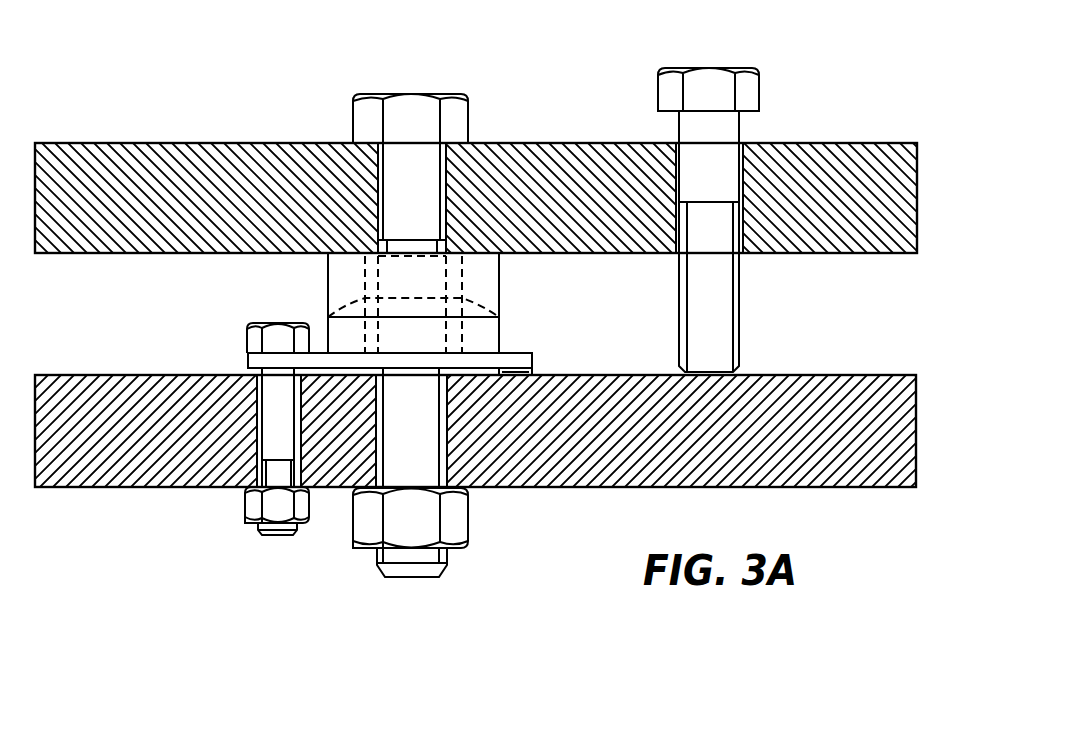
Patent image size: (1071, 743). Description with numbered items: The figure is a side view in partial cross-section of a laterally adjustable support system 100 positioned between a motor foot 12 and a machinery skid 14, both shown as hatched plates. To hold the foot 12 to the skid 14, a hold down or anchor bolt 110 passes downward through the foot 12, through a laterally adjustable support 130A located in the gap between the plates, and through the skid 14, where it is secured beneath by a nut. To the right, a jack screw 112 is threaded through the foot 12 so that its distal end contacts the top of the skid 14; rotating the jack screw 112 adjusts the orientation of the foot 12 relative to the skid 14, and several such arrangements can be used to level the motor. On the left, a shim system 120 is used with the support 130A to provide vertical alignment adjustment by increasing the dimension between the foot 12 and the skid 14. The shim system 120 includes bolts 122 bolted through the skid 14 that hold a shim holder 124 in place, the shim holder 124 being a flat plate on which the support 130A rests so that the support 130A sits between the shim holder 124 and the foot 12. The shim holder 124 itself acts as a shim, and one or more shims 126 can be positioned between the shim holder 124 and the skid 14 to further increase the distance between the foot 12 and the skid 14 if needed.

The laterally adjustable support system 100 is at (180, 93).
The motor foot 12 is at (67, 143).
The machinery skid 14 is at (66, 487).
The hold down or anchor bolt 110 is at (381, 84).
The jack screw 112 is at (672, 58).
The shim system 120 is at (235, 552).
The bolts 122 is at (279, 538).
The shim holder 124 is at (523, 352).
The shims 126 is at (538, 372).
The laterally adjustable support 130A is at (316, 300).